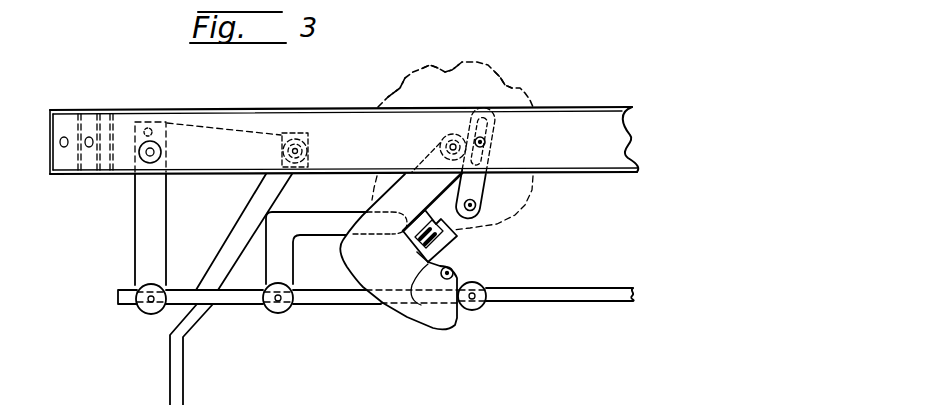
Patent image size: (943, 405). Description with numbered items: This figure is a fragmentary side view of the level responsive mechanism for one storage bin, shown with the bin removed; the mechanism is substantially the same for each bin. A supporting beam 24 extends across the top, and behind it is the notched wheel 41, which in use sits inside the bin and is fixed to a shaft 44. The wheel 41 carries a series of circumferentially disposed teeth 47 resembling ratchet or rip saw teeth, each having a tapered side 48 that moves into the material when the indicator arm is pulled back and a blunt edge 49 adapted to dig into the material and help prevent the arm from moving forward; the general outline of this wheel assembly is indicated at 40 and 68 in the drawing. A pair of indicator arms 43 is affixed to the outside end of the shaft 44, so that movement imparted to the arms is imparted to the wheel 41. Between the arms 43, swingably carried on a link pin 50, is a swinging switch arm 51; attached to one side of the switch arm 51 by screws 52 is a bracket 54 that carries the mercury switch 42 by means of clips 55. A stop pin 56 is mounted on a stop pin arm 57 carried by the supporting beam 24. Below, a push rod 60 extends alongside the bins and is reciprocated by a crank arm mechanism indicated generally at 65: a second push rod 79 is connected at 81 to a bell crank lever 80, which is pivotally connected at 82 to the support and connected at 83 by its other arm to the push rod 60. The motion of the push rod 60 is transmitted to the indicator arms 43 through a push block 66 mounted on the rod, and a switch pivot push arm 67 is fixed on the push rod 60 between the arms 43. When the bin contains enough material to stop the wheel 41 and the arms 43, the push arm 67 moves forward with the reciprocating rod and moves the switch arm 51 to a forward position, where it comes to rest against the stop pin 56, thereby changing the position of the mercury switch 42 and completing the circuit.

The supporting beam 24 is at (620, 138).
The housing 40 is at (516, 80).
The notched wheel 41 is at (492, 65).
The mercury switch 42 is at (410, 243).
The indicator arm 43 is at (453, 326).
The shaft 44 is at (440, 143).
The teeth 47 is at (430, 65).
The tapered side 48 is at (448, 68).
The blunt edge 49 is at (400, 88).
The link pin 50 is at (455, 270).
The swinging switch arm 51 is at (455, 249).
The screws 52 is at (421, 305).
The bracket 54 is at (500, 226).
The clips 55 is at (420, 256).
The stop pin 56 is at (476, 203).
The stop pin arm 57 is at (487, 176).
The push rod 60 is at (608, 292).
The crank arm mechanism 65 is at (127, 264).
The push block 66 is at (485, 292).
The switch pivot push arm 67 is at (286, 268).
The roller 68 is at (279, 300).
The second push rod 79 is at (173, 362).
The bell crank lever 80 is at (144, 212).
The connection of push rod to bell crank 81 is at (295, 138).
The pivotal connection of bell crank 82 is at (152, 148).
The connection of bell crank to push rod 83 is at (148, 300).